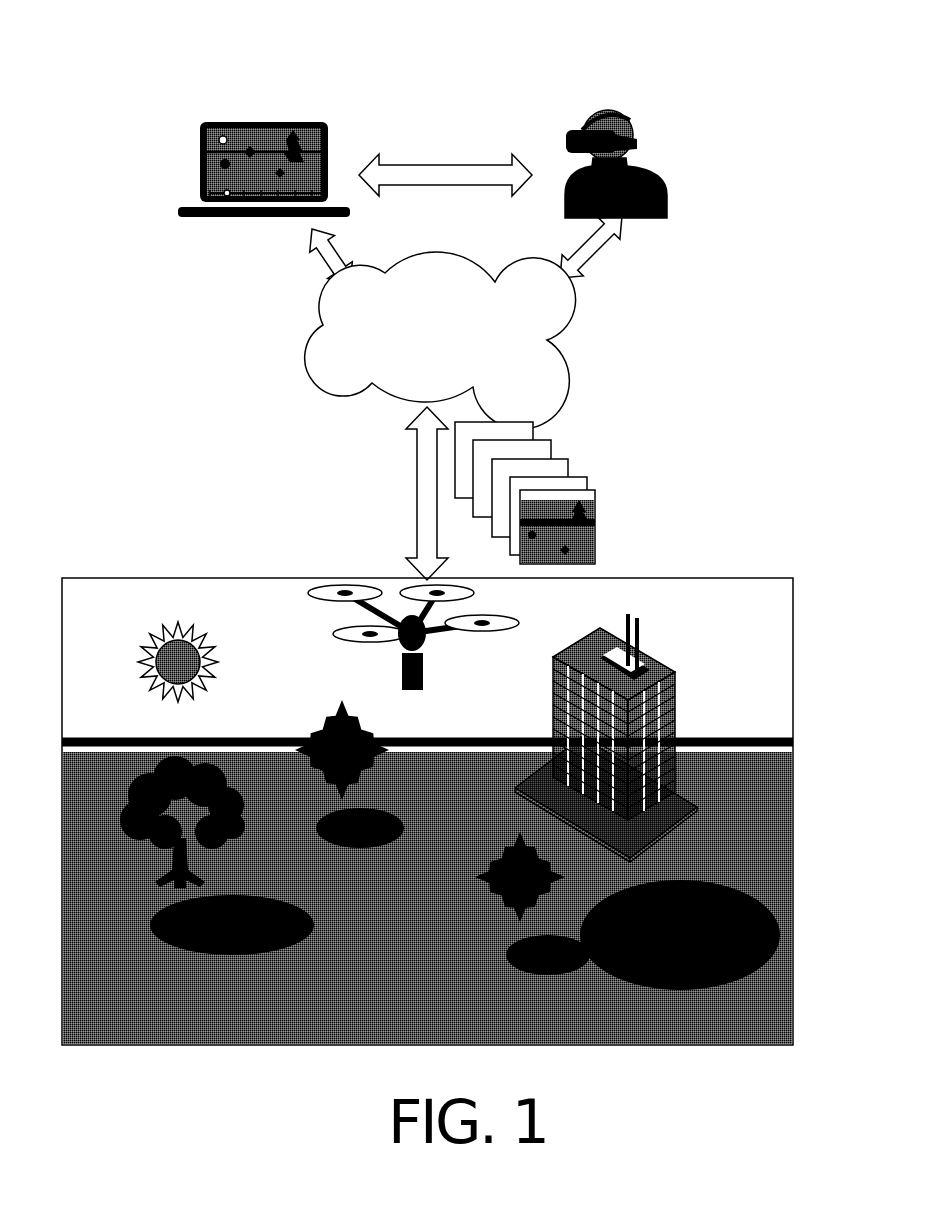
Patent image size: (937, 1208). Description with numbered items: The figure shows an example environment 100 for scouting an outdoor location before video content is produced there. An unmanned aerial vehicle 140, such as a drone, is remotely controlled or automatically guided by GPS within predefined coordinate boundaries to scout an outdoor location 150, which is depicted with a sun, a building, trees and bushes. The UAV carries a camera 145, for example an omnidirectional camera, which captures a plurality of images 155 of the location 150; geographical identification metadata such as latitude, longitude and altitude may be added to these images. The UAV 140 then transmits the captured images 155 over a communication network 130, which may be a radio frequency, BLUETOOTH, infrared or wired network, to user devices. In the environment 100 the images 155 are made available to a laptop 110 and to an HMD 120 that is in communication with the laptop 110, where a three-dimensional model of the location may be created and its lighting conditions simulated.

The example environment 100 is at (76, 44).
The laptop 110 is at (212, 122).
The HMD 120 is at (573, 133).
The communication network 130 is at (440, 340).
The unmanned aerial vehicle 140 is at (412, 612).
The camera 145 is at (420, 678).
The outdoor location 150 is at (149, 612).
The images 155 is at (585, 486).